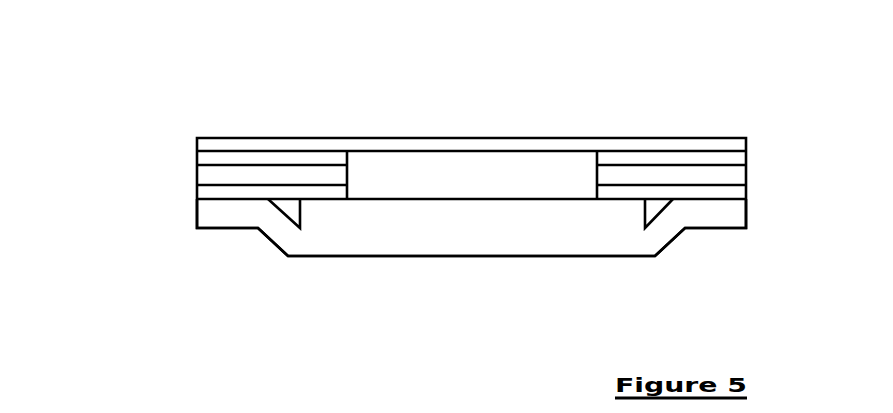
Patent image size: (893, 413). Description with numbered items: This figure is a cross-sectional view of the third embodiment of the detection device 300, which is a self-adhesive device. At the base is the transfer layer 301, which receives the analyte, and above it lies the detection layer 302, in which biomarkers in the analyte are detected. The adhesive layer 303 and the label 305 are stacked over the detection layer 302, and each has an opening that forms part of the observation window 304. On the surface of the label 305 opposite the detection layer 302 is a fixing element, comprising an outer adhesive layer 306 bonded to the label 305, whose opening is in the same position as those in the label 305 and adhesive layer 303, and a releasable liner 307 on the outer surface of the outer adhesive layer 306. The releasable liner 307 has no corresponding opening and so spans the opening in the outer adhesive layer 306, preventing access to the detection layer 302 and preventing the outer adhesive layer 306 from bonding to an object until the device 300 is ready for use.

The detection device 300 is at (180, 106).
The transfer layer 301 is at (212, 215).
The detection layer 302 is at (313, 219).
The adhesive layer 303 is at (225, 194).
The observation window 304 is at (472, 182).
The label 305 is at (318, 178).
The outer adhesive layer 306 is at (262, 158).
The releasable liner 307 is at (374, 145).